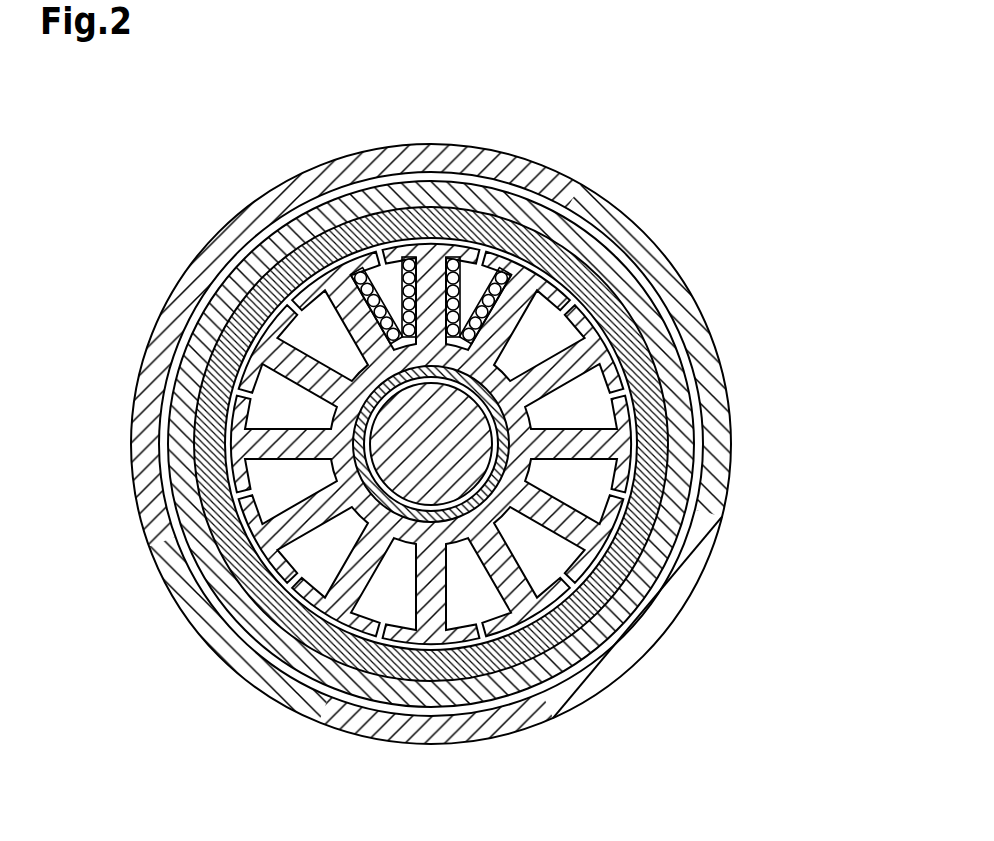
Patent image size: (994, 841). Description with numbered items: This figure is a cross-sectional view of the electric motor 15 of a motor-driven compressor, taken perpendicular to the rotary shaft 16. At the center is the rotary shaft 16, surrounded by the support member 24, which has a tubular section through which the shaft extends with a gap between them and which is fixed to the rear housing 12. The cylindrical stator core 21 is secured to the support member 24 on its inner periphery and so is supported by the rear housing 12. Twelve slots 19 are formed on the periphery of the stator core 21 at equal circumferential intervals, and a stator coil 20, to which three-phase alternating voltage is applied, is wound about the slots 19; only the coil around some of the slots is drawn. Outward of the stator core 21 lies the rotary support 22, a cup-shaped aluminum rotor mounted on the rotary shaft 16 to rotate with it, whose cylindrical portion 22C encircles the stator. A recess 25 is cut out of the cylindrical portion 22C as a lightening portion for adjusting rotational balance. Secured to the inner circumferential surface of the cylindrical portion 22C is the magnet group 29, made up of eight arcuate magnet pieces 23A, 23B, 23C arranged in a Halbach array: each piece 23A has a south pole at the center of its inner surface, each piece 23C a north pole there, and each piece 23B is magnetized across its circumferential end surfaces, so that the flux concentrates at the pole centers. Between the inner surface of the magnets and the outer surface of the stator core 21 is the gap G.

The rear housing 12 is at (437, 150).
The electric motor 15 is at (463, 173).
The rotary shaft 16 is at (460, 484).
The slots 19 is at (545, 327).
The stator coil 20 is at (476, 262).
The stator core 21 is at (640, 428).
The rotary support 22 is at (218, 278).
The cylindrical portion 22C is at (205, 325).
The arcuate magnet pieces 23A is at (547, 320).
The arcuate magnet pieces 23B is at (318, 232).
The arcuate magnet pieces 23C is at (653, 523).
The support member 24 is at (412, 522).
The recess 25 is at (383, 212).
The magnet group 29 is at (520, 668).
The gap G is at (297, 603).